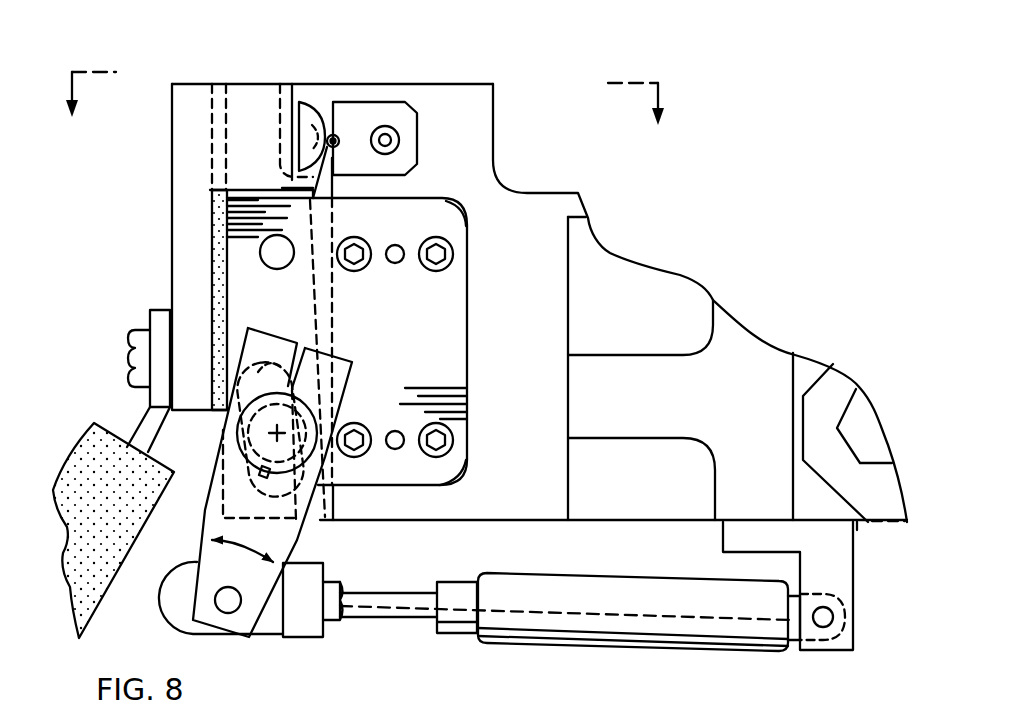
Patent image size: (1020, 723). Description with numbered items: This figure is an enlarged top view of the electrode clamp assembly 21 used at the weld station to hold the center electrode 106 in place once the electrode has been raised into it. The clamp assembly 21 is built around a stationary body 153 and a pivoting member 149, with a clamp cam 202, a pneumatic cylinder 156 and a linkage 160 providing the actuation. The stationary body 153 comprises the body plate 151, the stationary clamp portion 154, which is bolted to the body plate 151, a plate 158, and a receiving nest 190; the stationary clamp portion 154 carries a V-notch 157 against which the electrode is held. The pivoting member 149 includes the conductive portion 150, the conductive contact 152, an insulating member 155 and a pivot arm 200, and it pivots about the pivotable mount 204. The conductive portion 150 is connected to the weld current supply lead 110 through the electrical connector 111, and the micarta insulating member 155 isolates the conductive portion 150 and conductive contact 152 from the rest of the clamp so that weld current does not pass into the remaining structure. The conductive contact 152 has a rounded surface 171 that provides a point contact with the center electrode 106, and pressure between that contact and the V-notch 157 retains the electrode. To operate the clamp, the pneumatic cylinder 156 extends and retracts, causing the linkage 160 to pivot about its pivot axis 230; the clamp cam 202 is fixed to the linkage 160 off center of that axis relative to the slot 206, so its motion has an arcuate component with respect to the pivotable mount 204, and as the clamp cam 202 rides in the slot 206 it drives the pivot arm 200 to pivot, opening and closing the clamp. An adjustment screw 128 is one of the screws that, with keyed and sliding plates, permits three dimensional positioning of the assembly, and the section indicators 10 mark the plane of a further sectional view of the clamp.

The section line 10- 10 is at (366, 100).
The clamp assembly 21 is at (480, 74).
The center electrode 106 is at (342, 128).
The electrical lead 110 is at (80, 463).
The electrical connector 111 is at (132, 356).
The adjustment screw 128 is at (858, 422).
The pivoting member 149 is at (238, 87).
The conductive portion 150 is at (170, 97).
The body plate 151 is at (480, 195).
The conductive contact 152 is at (311, 109).
The stationary body 153 is at (487, 121).
The stationary clamp portion 154 is at (380, 112).
The insulating member 155 is at (222, 277).
The pneumatic cylinder 156 is at (607, 632).
The V-notch 157 is at (338, 143).
The plate 158 is at (467, 270).
The linkage 160 is at (258, 588).
The rounded surface 171 is at (334, 153).
The receiving nest 190 is at (325, 112).
The pivot arm 200 is at (240, 168).
The clamp cam 202 is at (212, 495).
The pivotable mount 204 is at (262, 258).
The slot 206 is at (274, 356).
The pivot axis 230 is at (280, 431).